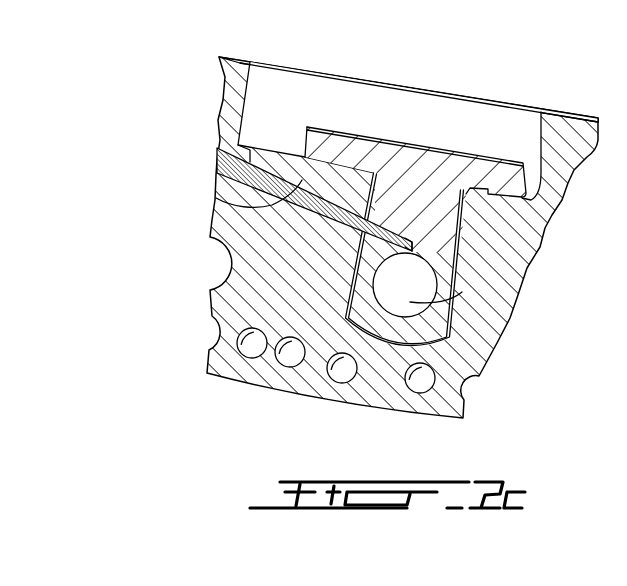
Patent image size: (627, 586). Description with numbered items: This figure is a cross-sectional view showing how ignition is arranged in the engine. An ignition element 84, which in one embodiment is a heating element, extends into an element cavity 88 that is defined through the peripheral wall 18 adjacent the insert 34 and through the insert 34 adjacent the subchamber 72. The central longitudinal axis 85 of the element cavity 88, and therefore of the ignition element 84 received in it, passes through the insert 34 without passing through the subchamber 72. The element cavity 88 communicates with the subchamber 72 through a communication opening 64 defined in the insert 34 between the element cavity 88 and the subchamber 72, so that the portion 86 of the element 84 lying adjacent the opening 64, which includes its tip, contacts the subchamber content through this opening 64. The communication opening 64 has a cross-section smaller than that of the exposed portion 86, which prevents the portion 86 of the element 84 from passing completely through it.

The peripheral wall 18 is at (568, 138).
The insert 34 is at (448, 198).
The communication opening 64 is at (360, 275).
The subchamber 72 is at (457, 296).
The ignition element 84 is at (240, 149).
The central longitudinal axis 85 is at (216, 198).
The portion of the element 86 is at (417, 244).
The element cavity 88 is at (250, 162).